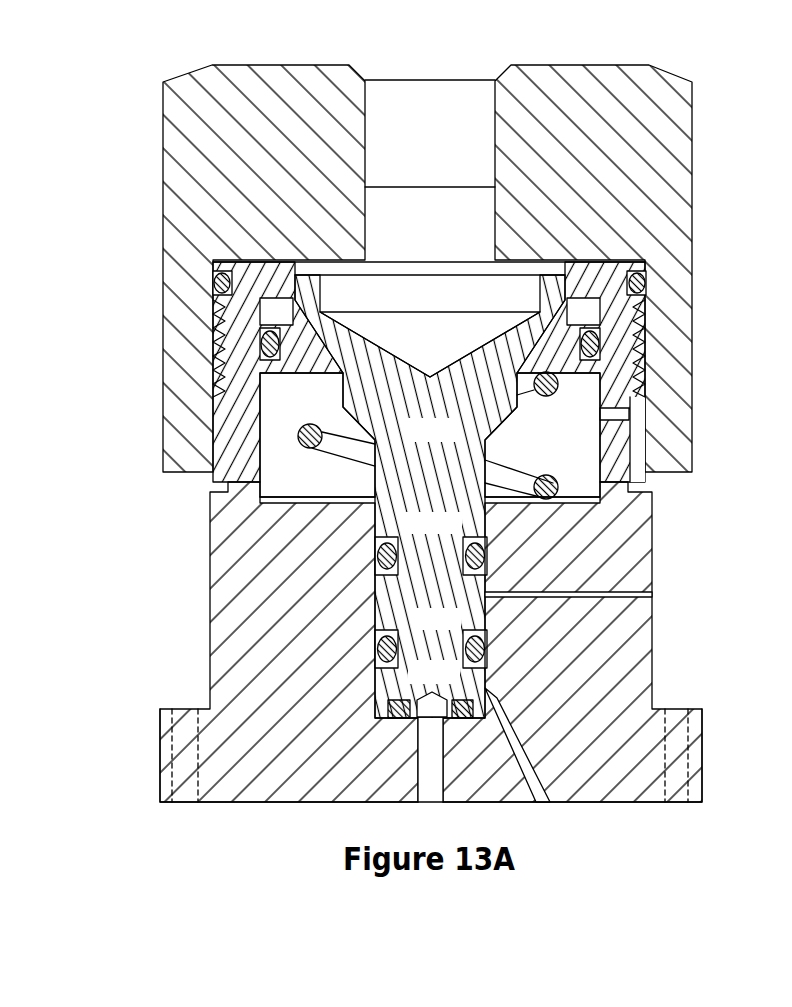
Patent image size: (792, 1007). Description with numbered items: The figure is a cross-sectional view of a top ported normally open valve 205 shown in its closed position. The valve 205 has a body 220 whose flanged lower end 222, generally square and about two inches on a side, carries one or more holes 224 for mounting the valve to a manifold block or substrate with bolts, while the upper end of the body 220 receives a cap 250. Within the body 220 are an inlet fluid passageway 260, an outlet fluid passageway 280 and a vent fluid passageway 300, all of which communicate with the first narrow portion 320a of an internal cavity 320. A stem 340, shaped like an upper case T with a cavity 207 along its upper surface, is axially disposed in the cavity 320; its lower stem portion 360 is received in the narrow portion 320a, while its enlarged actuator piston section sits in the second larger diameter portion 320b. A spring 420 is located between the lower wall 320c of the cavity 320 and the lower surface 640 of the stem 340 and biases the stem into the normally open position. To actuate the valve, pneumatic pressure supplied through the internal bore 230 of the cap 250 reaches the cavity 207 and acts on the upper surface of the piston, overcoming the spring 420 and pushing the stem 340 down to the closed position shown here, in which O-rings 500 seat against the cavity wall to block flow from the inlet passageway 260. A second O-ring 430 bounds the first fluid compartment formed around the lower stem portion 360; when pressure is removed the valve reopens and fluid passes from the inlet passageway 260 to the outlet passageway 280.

The valve 205 is at (128, 144).
The internal bore 230 is at (365, 100).
The cap 250 is at (460, 248).
The cavity 207 is at (483, 320).
The internal cavity 320 is at (582, 302).
The lower surface 640 is at (279, 378).
The stem 340 is at (430, 496).
The second larger diameter portion 320b is at (598, 390).
The spring 420 is at (328, 452).
The lower wall 320c is at (573, 496).
The body 220 is at (218, 604).
The first narrow portion 320a is at (393, 600).
The second O-ring 430 is at (398, 652).
The lower stem portion 360 is at (458, 682).
The vent fluid passageway 300 is at (684, 582).
The holes 224 is at (186, 709).
The flanged lower end 222 is at (159, 760).
The O-rings 500 is at (398, 722).
The inlet fluid passageway 260 is at (432, 790).
The outlet fluid passageway 280 is at (540, 810).